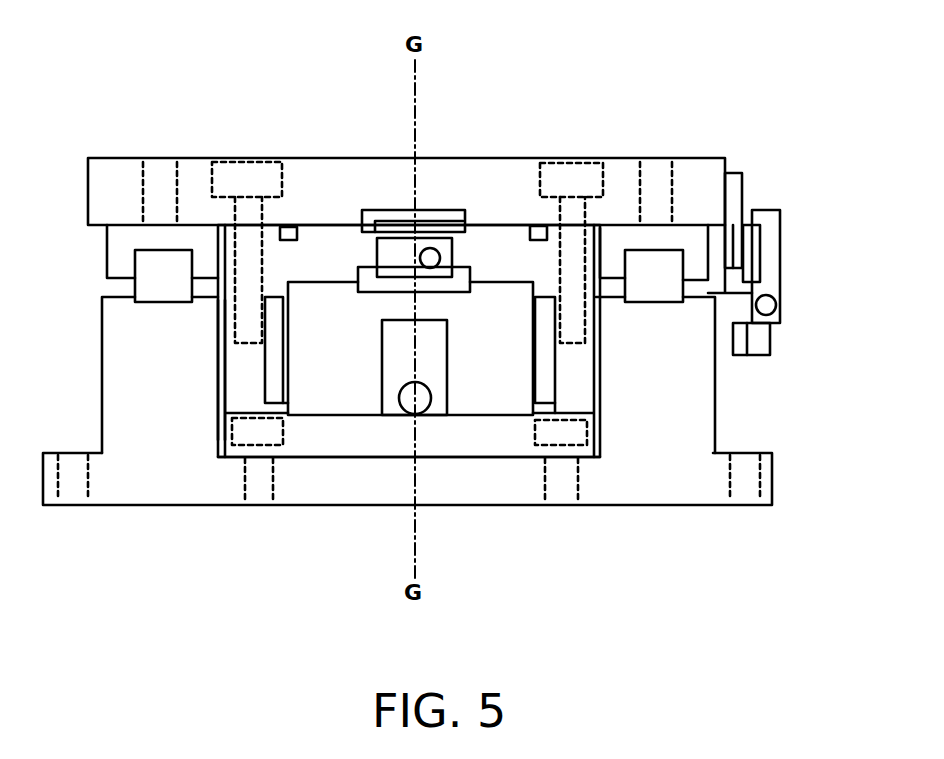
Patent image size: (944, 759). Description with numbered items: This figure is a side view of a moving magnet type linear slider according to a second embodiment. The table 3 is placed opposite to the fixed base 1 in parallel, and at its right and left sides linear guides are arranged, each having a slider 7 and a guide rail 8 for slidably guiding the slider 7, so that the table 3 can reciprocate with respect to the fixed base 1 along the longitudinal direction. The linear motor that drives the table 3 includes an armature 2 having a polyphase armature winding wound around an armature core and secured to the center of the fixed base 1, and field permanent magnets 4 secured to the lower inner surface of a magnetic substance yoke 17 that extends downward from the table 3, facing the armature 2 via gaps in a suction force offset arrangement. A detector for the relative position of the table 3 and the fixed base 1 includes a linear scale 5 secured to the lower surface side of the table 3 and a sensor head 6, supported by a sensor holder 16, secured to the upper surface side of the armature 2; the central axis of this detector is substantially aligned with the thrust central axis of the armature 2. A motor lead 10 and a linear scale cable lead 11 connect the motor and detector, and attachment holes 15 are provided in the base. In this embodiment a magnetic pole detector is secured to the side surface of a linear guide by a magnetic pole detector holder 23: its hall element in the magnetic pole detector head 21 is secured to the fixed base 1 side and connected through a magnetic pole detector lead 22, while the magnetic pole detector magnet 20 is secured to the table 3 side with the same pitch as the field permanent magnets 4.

The fixed base 1 is at (670, 488).
The armature 2 is at (312, 268).
The table 3 is at (480, 167).
The field permanent magnet 4 is at (270, 383).
The linear scale 5 is at (453, 232).
The sensor head 6 is at (375, 268).
The slider 7 is at (127, 240).
The guide rail 8 is at (150, 278).
The motor lead 10 is at (425, 408).
The linear scale cable lead 11 is at (440, 258).
The attachment hole 15 is at (88, 468).
The sensor holder 16 is at (365, 270).
The magnetic substance yoke 17 is at (237, 353).
The magnetic pole detector magnet 20 is at (735, 173).
The magnetic pole detector head 21 is at (758, 210).
The magnetic pole detector lead 22 is at (780, 305).
The magnetic pole detector holder 23 is at (724, 343).